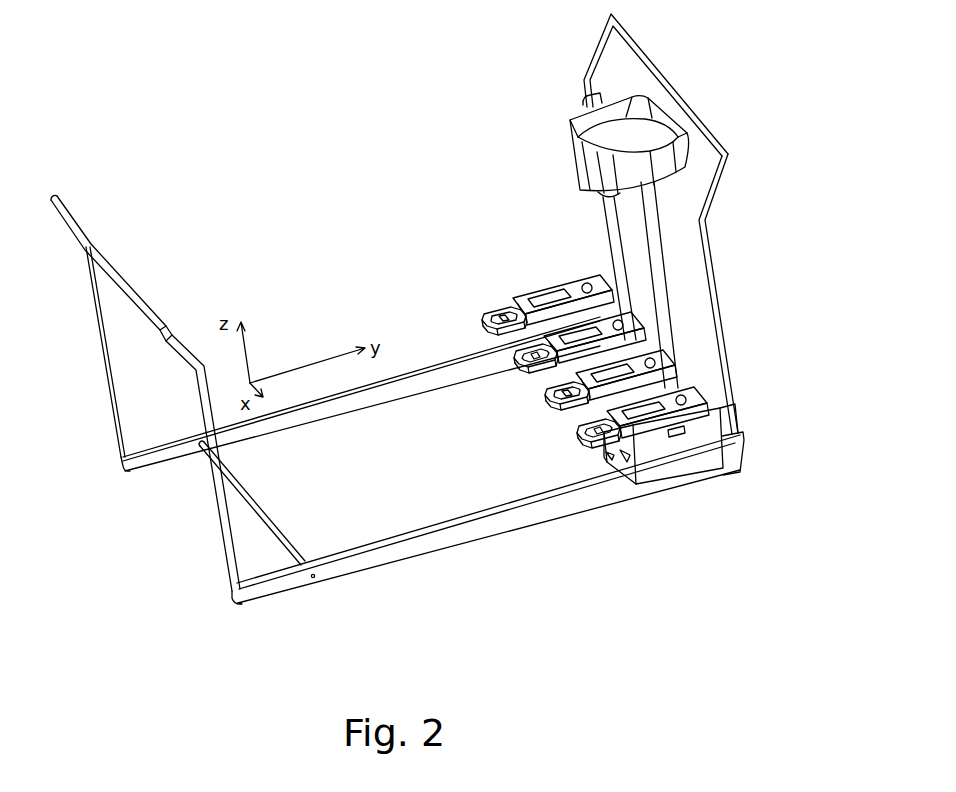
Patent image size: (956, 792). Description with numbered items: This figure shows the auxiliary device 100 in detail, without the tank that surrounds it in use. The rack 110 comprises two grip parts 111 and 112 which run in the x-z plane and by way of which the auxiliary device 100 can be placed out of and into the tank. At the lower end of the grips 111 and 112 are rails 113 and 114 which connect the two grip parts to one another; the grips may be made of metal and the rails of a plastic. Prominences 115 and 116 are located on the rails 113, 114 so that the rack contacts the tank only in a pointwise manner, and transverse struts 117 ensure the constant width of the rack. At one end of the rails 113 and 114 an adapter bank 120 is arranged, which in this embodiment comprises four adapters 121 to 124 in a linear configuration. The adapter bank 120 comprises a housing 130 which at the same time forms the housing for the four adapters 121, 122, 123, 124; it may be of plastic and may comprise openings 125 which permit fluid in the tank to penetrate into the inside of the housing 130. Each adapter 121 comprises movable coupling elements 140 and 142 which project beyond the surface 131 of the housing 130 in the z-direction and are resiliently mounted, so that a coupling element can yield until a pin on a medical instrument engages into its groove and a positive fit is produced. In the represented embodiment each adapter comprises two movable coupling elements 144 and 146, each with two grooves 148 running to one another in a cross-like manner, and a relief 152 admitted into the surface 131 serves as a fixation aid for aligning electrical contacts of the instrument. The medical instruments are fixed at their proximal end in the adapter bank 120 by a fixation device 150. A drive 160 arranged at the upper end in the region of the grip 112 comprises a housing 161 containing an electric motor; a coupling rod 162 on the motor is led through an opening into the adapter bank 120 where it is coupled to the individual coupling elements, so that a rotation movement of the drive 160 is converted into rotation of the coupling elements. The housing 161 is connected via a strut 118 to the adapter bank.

The auxiliary device 100 is at (527, 108).
The rack 110 is at (716, 243).
The grip part 111 is at (113, 262).
The grip part 112 is at (692, 102).
The rail 113 is at (372, 397).
The rail 114 is at (418, 550).
The prominence 115 is at (245, 609).
The prominence 116 is at (740, 476).
The transverse strut 117 is at (263, 510).
The strut 118 is at (655, 205).
The adapter bank 120 is at (688, 462).
The adapter 121 is at (578, 455).
The adapter 122 is at (543, 404).
The adapter 123 is at (517, 371).
The adapter 124 is at (496, 296).
The opening 125 is at (623, 458).
The housing 130 is at (702, 420).
The surface 131 is at (530, 300).
The coupling element 140 is at (680, 400).
The coupling element 142 is at (721, 440).
The coupling element 144 is at (665, 335).
The coupling element 146 is at (612, 460).
The groove 148 is at (651, 404).
The fixation device 150 is at (568, 434).
The relief 152 is at (657, 375).
The drive 160 is at (561, 110).
The housing 161 is at (572, 152).
The coupling rod 162 is at (606, 210).